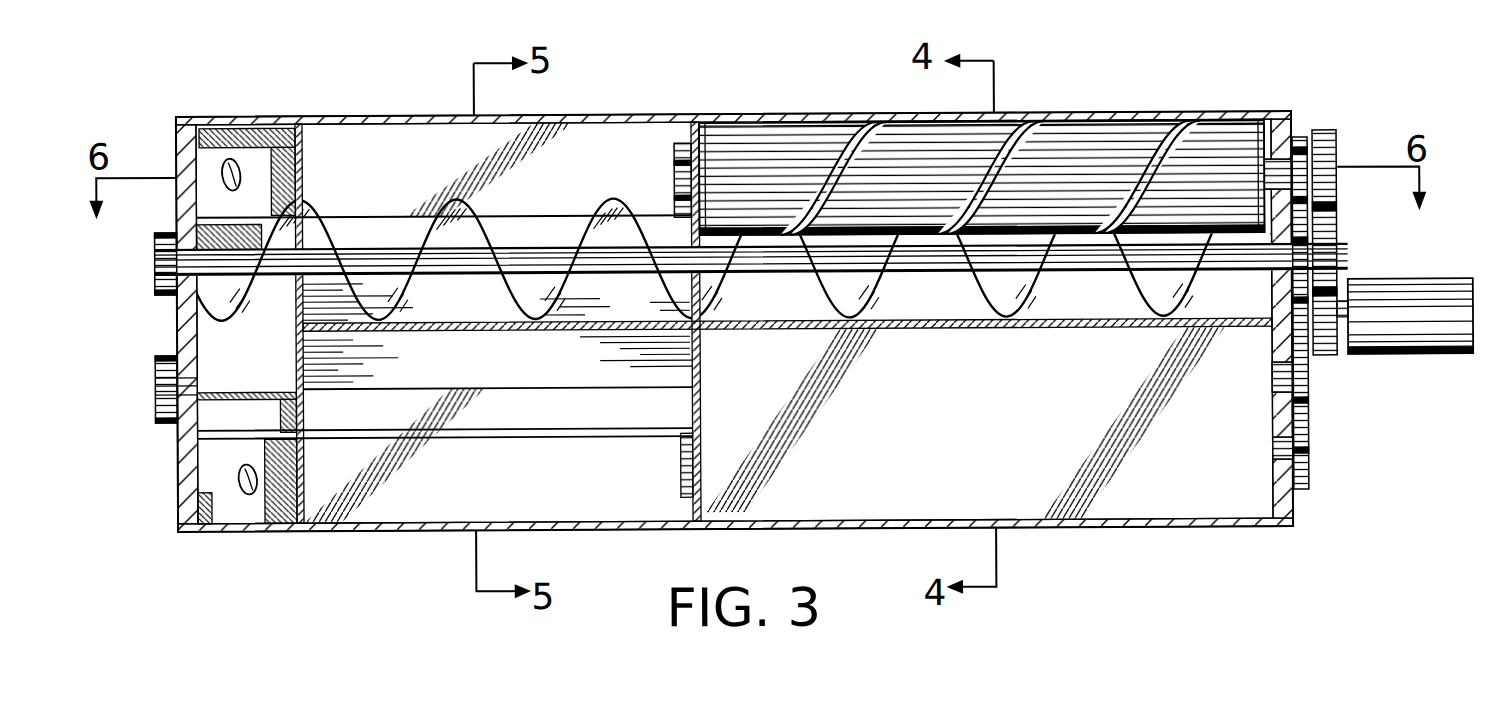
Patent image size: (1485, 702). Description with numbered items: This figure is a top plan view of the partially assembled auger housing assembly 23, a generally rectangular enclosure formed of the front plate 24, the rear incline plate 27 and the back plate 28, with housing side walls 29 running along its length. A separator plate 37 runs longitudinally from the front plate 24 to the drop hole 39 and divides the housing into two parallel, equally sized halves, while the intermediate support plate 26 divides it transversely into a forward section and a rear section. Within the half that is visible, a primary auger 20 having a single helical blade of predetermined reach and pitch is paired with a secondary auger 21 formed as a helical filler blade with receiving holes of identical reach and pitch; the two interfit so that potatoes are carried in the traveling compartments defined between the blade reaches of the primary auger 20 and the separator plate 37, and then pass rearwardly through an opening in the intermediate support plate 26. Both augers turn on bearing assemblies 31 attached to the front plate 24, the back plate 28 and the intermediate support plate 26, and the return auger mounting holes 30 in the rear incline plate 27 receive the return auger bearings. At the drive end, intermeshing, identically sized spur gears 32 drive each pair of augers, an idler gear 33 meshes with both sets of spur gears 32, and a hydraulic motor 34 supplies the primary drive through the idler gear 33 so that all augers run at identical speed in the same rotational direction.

The primary auger 20 is at (1185, 286).
The secondary auger 21 is at (1070, 135).
The auger housing assembly 23 is at (996, 465).
The front plate 24 is at (1294, 512).
The intermediate support plate 26 is at (700, 362).
The rear incline plate 27 is at (266, 510).
The back plate 28 is at (178, 466).
The housing side walls 29 is at (740, 113).
The return auger mounting holes 30 is at (242, 170).
The bearing assemblies 31 is at (155, 263).
The spur gears 32 is at (1342, 188).
The idler gear 33 is at (1346, 302).
The hydraulic motor 34 is at (1430, 357).
The separator plate 37 is at (860, 330).
The drop hole 39 is at (216, 338).